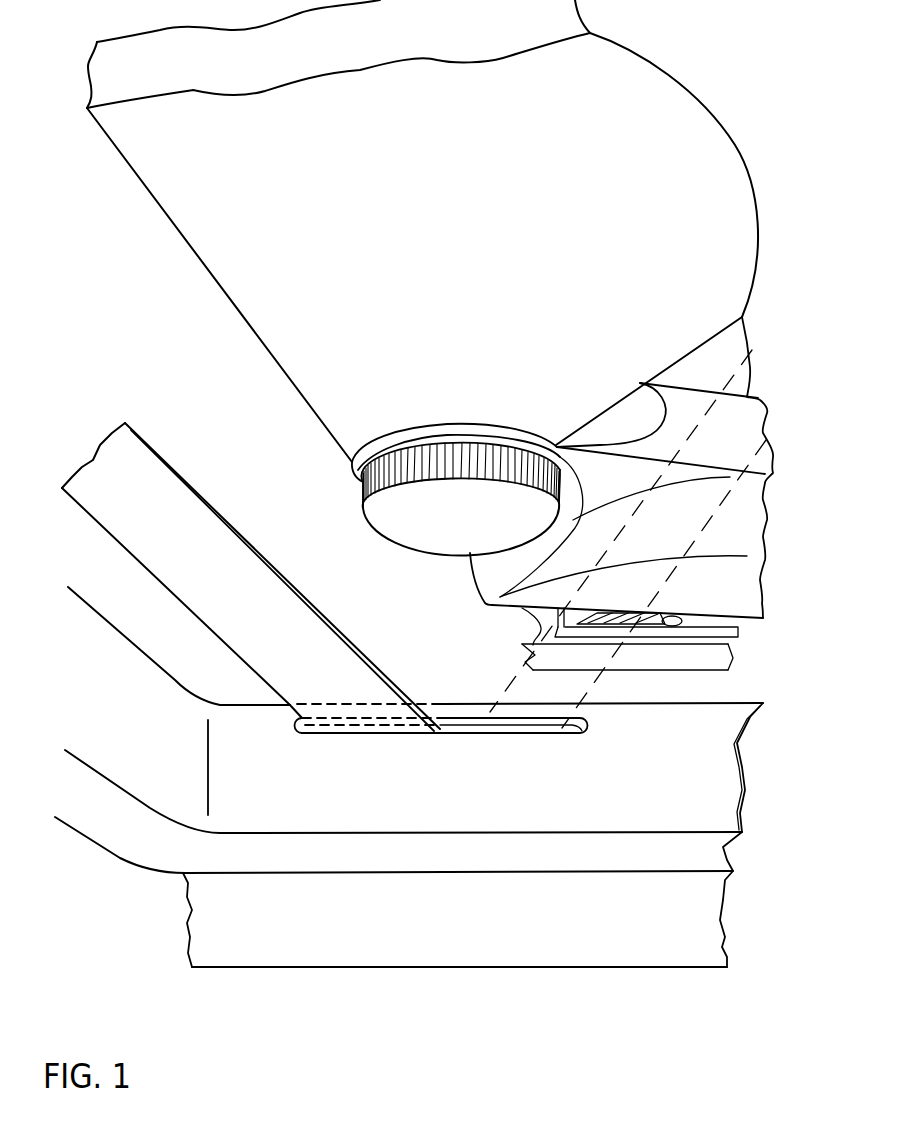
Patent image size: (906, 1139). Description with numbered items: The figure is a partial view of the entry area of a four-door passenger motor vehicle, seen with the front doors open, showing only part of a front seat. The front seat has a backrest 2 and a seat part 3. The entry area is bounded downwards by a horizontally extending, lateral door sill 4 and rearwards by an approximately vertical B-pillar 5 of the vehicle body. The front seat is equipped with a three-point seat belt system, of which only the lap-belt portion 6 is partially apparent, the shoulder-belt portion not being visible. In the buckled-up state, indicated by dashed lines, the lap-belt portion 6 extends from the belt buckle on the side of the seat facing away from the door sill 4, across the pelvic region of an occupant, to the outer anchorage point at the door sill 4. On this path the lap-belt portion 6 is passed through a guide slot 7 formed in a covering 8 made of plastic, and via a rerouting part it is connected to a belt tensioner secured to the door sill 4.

The backrest 2 is at (427, 204).
The seat part 3 is at (743, 515).
The lateral door sill 4 is at (489, 940).
The B-pillar 5 is at (106, 711).
The lap-belt portion 6 is at (208, 574).
The guide slot 7 is at (510, 727).
The covering 8 is at (682, 786).